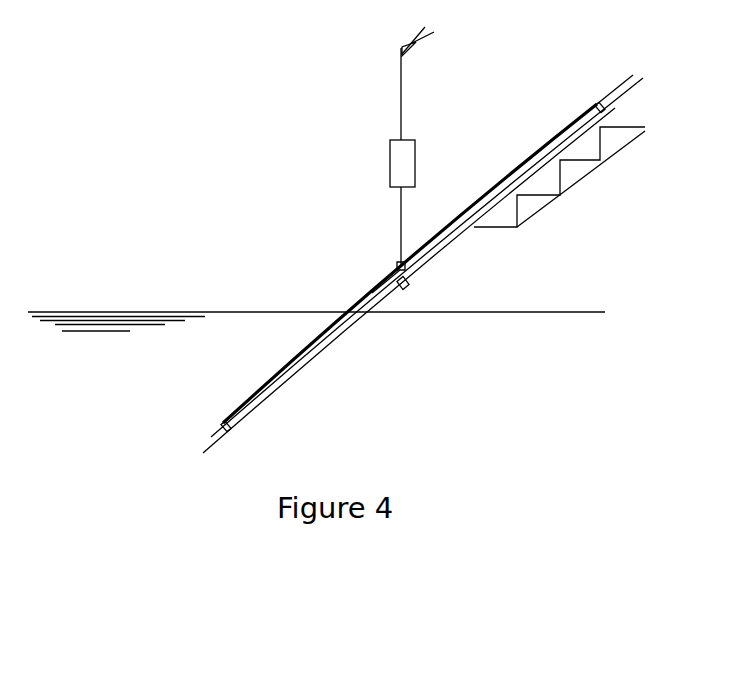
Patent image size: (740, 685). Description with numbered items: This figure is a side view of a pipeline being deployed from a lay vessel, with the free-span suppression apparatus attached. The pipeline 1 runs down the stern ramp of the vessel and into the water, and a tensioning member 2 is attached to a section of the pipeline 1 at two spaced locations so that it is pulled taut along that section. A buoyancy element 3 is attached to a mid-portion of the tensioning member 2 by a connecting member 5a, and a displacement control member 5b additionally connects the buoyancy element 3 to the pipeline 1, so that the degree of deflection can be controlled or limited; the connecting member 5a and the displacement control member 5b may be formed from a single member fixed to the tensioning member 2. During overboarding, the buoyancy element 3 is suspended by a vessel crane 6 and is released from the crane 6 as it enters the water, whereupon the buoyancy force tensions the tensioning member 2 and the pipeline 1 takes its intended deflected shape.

The pipeline 1 is at (455, 246).
The tensioning member 2 is at (518, 158).
The buoyancy element 3 is at (405, 162).
The connecting member 5a is at (396, 240).
The displacement control member 5b is at (402, 288).
The vessel crane 6 is at (423, 36).